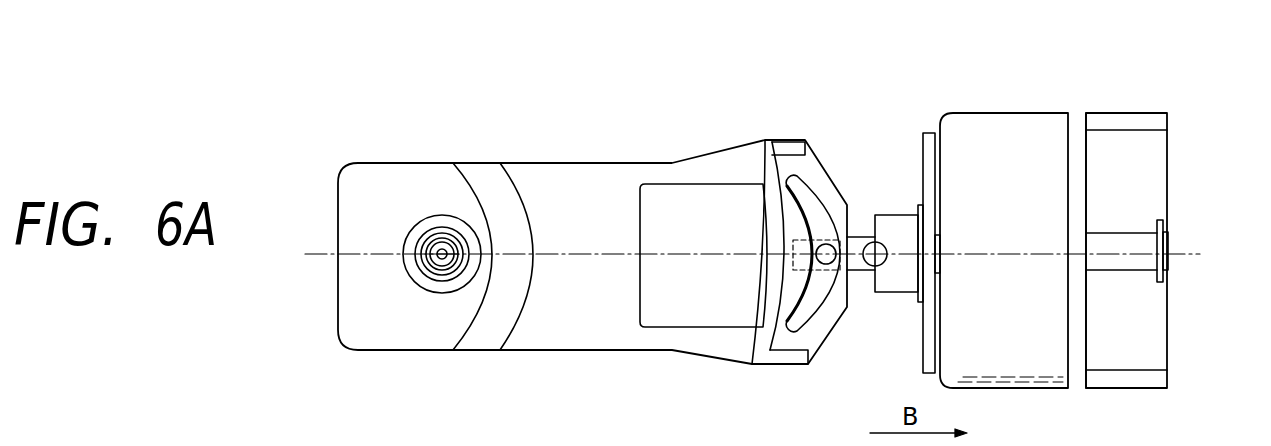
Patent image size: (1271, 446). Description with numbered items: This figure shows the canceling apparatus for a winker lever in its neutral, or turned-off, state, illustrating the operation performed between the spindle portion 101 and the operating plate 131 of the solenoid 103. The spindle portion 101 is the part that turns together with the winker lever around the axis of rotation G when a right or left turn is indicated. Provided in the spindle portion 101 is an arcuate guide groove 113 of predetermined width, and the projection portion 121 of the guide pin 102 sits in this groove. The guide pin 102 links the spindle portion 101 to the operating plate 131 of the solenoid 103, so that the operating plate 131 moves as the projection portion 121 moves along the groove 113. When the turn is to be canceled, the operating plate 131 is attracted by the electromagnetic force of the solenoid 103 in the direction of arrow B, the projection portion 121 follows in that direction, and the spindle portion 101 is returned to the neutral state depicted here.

The spindle portion 101 is at (608, 160).
The axis of rotation G is at (438, 264).
The arcuate guide groove 113 is at (798, 182).
The projection portion 121 is at (823, 273).
The guide pin 102 is at (860, 272).
The operating plate 131 is at (932, 135).
The solenoid 103 is at (1027, 113).